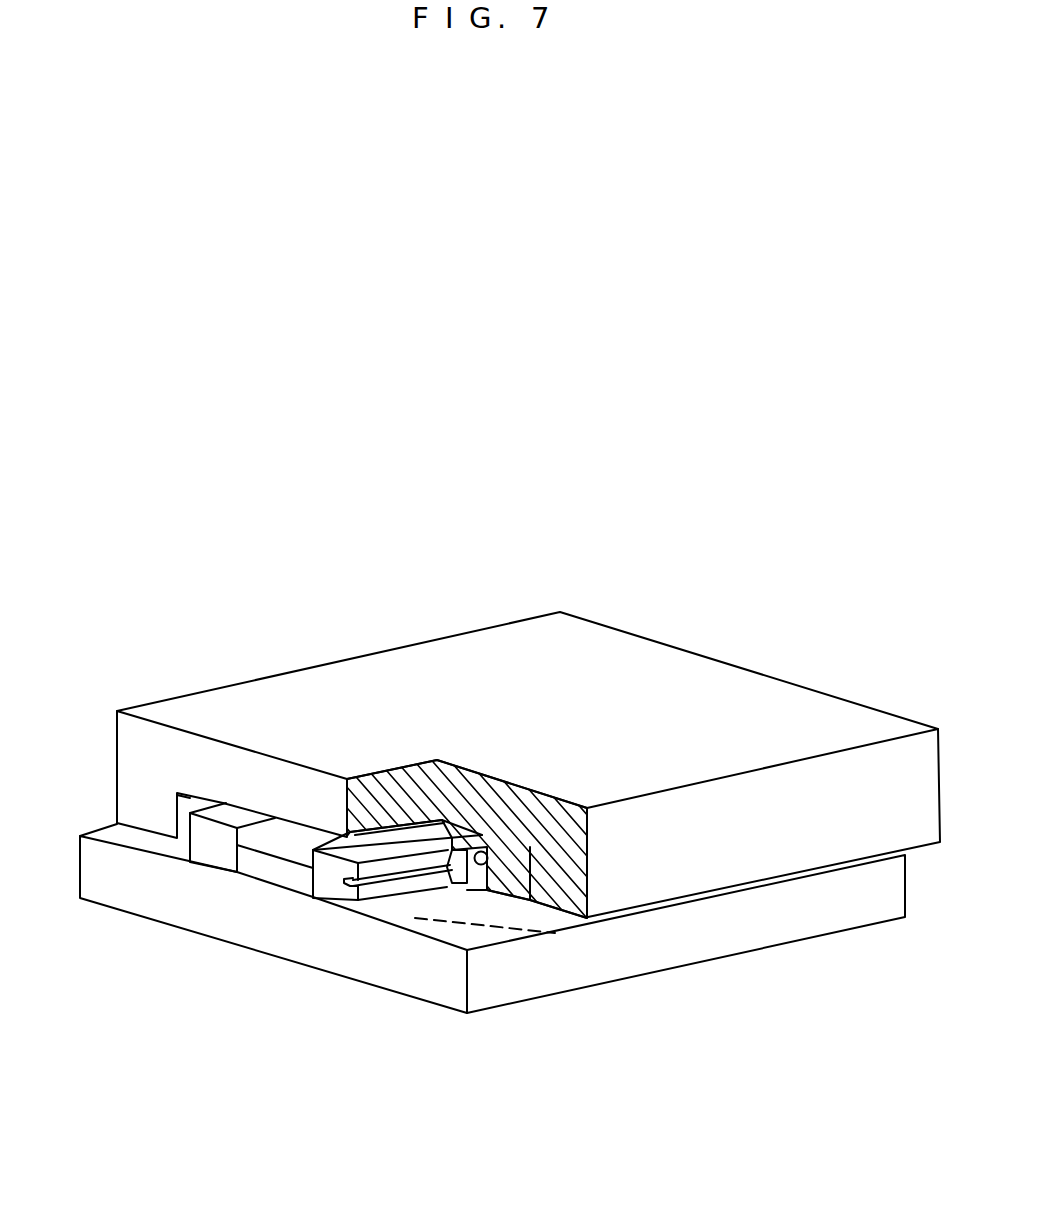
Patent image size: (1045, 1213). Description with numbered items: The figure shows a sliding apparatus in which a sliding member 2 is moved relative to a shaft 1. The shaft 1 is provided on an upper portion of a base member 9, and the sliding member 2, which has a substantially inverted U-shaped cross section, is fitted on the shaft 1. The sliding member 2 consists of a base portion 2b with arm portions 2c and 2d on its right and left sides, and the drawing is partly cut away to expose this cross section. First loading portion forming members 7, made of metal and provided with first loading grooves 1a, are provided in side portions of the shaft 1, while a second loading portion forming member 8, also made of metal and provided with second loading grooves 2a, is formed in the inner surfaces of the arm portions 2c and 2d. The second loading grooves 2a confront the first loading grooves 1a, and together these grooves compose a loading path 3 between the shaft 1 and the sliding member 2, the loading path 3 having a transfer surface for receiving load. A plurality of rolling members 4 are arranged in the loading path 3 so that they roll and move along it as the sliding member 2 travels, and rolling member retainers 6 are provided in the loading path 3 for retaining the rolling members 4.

The shaft 1 is at (267, 867).
The first loading grooves 1a is at (372, 897).
The sliding member 2 is at (180, 697).
The second loading grooves 2a is at (473, 893).
The base portion 2b is at (266, 788).
The arm portion 2c is at (137, 811).
The arm portion 2d is at (573, 858).
The loading path 3 is at (400, 895).
The rolling members 4 is at (463, 897).
The rolling member retainers 6 is at (470, 888).
The first loading portion forming members 7 is at (212, 858).
The second loading portion forming member 8 is at (189, 836).
The base member 9 is at (155, 920).